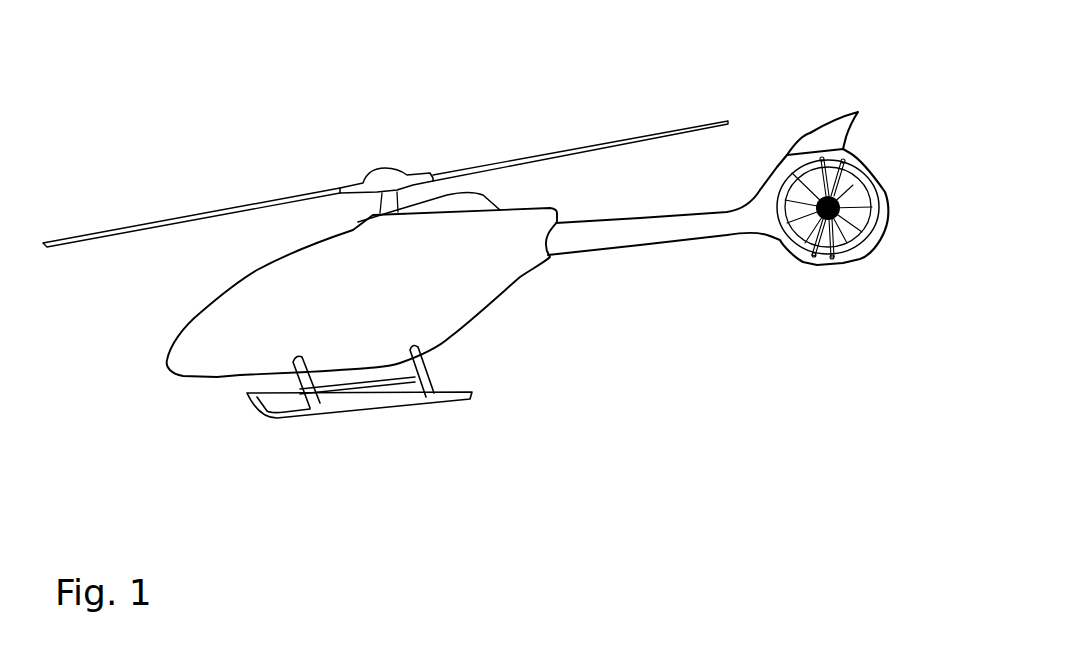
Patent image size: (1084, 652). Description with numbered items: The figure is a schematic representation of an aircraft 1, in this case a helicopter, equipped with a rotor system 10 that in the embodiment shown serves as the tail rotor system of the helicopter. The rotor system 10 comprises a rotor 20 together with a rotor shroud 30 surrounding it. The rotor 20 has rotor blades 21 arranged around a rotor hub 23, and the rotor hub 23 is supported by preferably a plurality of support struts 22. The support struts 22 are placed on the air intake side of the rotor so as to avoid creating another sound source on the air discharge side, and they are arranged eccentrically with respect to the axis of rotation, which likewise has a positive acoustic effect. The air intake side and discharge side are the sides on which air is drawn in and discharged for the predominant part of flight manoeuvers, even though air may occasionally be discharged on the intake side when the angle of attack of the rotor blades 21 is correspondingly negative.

The aircraft 1 is at (207, 127).
The rotor system 10 is at (827, 283).
The rotor 20 is at (849, 193).
The rotor blades 21 is at (836, 222).
The support struts 22 is at (817, 163).
The rotor hub 23 is at (853, 198).
The rotor shroud 30 is at (787, 246).